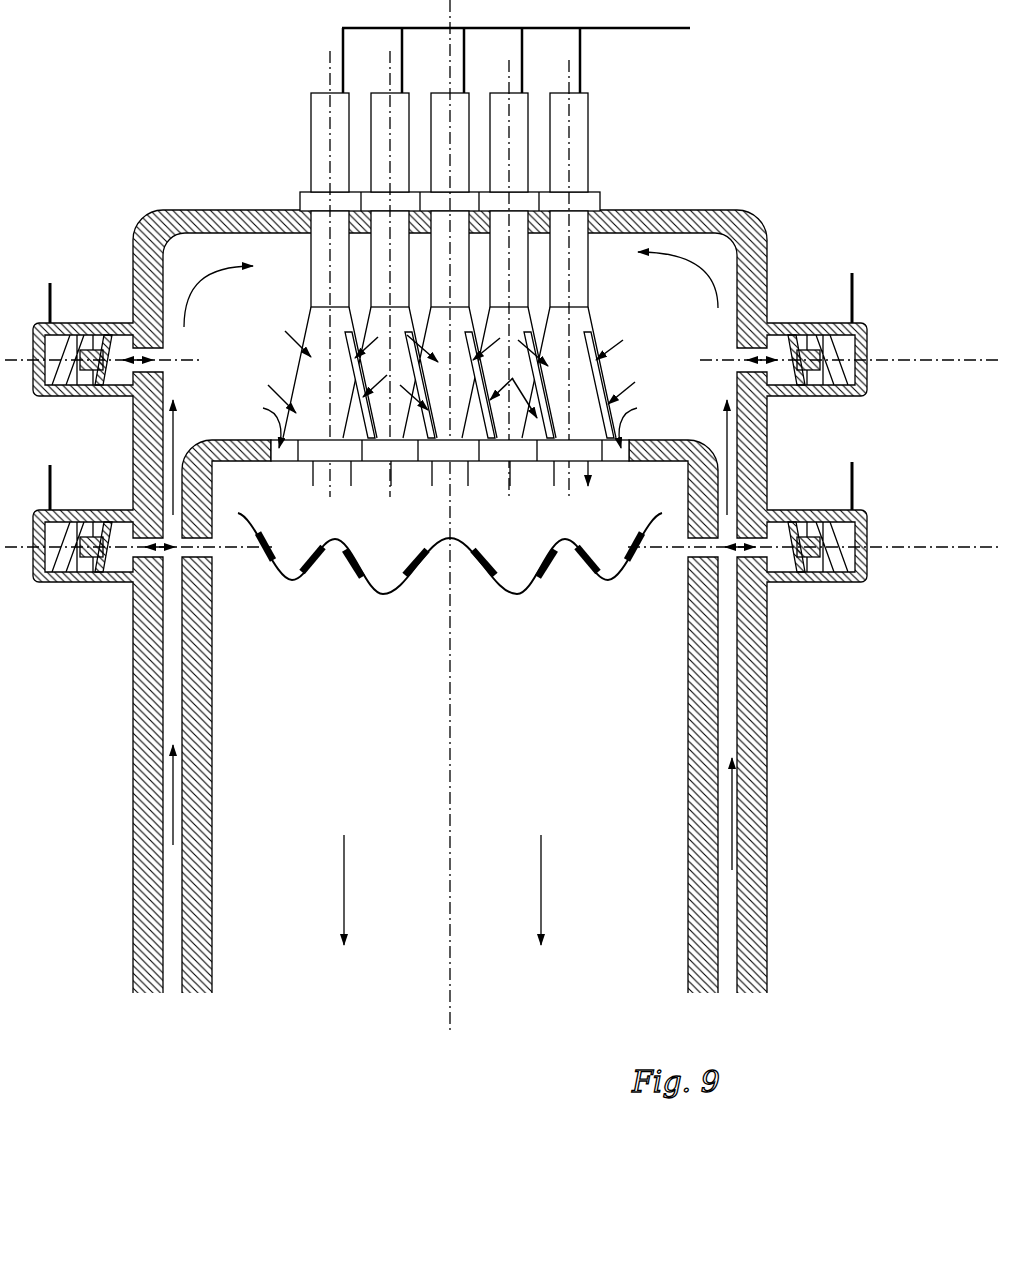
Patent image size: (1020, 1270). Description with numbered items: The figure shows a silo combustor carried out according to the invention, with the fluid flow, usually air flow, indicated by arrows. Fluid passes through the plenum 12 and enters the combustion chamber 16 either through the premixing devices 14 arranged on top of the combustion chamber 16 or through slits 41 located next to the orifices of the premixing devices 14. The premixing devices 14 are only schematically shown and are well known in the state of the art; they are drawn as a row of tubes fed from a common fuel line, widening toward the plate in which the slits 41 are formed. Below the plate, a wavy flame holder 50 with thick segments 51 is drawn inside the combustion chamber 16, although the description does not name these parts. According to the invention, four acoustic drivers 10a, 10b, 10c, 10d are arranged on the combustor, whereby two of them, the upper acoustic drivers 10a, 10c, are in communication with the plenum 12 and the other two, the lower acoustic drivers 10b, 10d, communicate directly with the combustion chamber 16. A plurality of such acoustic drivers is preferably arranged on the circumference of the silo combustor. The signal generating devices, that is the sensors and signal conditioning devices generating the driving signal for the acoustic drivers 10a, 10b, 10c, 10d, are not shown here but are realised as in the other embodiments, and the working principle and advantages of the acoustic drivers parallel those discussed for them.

The acoustic driver 10a is at (800, 323).
The acoustic driver 10b is at (832, 582).
The acoustic driver 10c is at (80, 323).
The acoustic driver 10d is at (70, 582).
The plenum 12 is at (652, 313).
The premixing device 14 is at (313, 383).
The combustion chamber 16 is at (518, 741).
The slit 41 is at (277, 440).
The flame holder 50 is at (516, 595).
The flame holder segments 51 is at (266, 560).